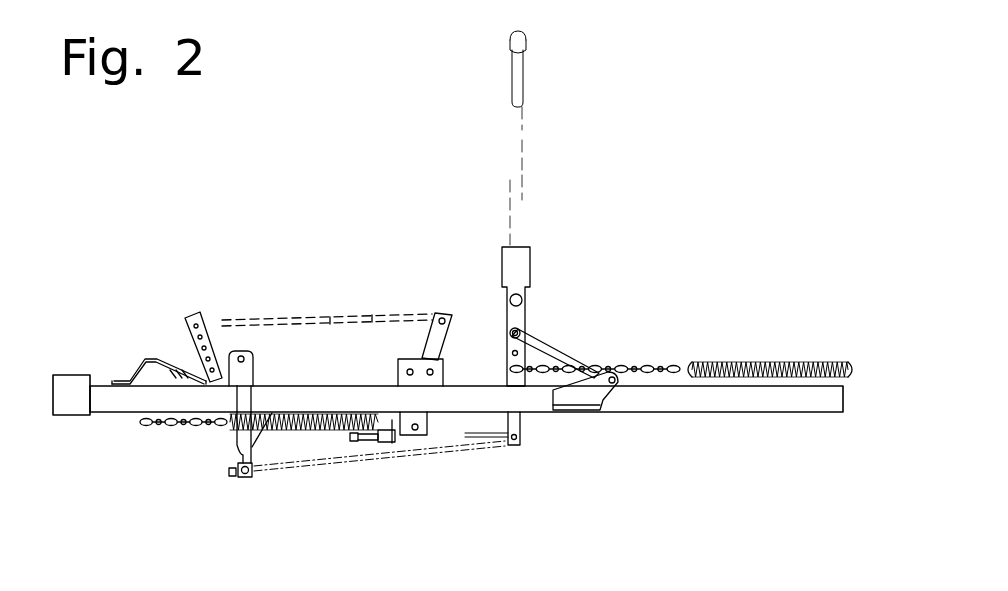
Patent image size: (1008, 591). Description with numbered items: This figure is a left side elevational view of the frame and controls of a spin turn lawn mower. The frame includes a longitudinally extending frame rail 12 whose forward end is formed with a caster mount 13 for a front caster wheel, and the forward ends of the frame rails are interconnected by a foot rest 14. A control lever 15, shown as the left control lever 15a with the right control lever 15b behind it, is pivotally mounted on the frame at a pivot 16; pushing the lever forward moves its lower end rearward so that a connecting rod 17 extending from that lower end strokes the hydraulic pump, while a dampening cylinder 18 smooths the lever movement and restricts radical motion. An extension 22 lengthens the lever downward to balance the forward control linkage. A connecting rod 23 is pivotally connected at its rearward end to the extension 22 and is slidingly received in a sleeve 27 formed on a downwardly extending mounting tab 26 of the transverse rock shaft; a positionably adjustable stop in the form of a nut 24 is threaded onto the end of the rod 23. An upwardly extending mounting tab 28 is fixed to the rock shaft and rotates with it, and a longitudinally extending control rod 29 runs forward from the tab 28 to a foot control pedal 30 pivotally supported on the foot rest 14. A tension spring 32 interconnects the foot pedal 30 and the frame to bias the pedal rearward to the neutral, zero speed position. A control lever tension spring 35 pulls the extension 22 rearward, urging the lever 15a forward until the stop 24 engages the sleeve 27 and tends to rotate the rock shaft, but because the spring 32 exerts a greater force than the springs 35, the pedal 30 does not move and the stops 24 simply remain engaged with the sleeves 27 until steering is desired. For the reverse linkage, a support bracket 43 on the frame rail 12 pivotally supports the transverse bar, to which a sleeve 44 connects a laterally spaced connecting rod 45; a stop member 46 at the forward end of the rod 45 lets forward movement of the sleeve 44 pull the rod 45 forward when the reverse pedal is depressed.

The frame rail 12 is at (800, 407).
The caster mount 13 is at (68, 414).
The foot rest 14 is at (165, 362).
The control lever 15 is at (634, 589).
The left control lever 15a is at (523, 63).
The right control lever 15b is at (312, 589).
The pivot 16 is at (525, 300).
The connecting rod 17 is at (540, 343).
The dampening cylinder 18 is at (592, 362).
The extension 22 is at (518, 425).
The connecting rod 23 is at (453, 442).
The nut 24 is at (358, 438).
The mounting tab 26 is at (393, 424).
The sleeve 27 is at (382, 440).
The mounting tab 28 is at (432, 342).
The control rod 29 is at (377, 320).
The foot control pedal 30 is at (192, 348).
The tension spring 32 is at (307, 413).
The control lever tension spring 35 is at (740, 365).
The support bracket 43 is at (228, 353).
The sleeve 44 is at (240, 477).
The connecting rod 45 is at (267, 472).
The stop member 46 is at (232, 473).